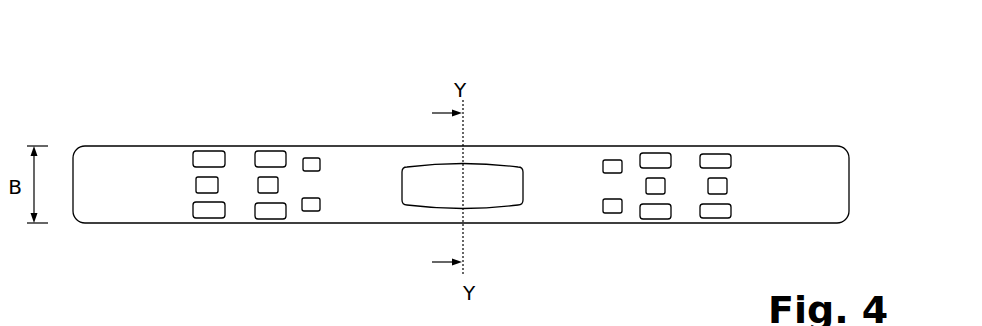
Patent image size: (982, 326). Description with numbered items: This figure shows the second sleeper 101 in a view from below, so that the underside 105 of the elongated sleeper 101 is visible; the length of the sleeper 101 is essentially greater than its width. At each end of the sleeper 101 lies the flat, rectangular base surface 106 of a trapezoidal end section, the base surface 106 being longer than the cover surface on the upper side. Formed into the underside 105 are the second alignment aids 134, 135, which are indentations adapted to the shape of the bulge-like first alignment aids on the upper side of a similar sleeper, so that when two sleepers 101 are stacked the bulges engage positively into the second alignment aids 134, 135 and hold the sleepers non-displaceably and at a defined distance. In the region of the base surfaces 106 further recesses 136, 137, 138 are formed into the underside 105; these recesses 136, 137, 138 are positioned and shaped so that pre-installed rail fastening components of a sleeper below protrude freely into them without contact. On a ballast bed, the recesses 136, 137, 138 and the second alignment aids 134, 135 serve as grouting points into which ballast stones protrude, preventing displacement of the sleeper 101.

The sleeper 101 is at (262, 117).
The underside 105 is at (564, 170).
The base surface 106 is at (160, 172).
The second alignment aid 134 is at (310, 165).
The second alignment aid 135 is at (310, 210).
The recess 136 is at (208, 160).
The recess 137 is at (265, 186).
The recess 138 is at (272, 212).